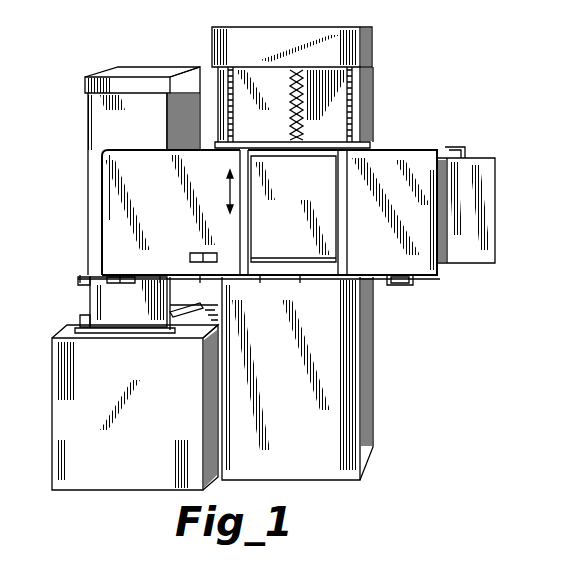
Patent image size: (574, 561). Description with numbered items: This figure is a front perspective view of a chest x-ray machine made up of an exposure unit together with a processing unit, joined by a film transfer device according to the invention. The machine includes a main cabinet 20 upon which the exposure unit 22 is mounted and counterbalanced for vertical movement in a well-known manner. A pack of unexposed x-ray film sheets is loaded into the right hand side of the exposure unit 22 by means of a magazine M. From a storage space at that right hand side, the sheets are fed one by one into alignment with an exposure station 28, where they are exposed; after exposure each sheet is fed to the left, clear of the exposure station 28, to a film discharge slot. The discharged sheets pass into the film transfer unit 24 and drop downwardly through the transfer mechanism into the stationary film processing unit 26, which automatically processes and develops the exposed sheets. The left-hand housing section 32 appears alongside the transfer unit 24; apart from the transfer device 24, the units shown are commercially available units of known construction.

The main cabinet 20 is at (348, 372).
The exposure unit 22 is at (385, 170).
The film transfer unit 24 is at (88, 118).
The film processing unit 26 is at (185, 373).
The exposure station 28 is at (307, 190).
The left housing section 32 is at (95, 205).
The magazine M is at (493, 175).